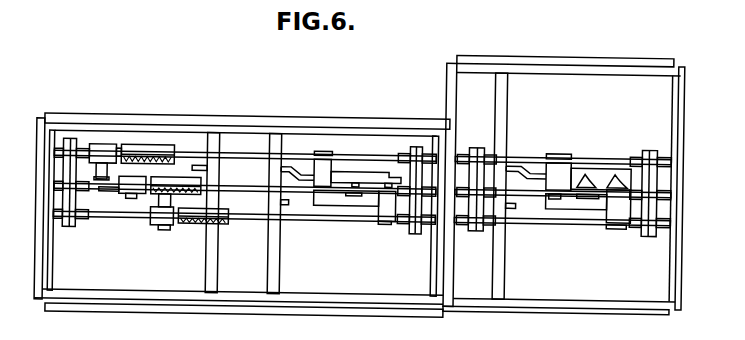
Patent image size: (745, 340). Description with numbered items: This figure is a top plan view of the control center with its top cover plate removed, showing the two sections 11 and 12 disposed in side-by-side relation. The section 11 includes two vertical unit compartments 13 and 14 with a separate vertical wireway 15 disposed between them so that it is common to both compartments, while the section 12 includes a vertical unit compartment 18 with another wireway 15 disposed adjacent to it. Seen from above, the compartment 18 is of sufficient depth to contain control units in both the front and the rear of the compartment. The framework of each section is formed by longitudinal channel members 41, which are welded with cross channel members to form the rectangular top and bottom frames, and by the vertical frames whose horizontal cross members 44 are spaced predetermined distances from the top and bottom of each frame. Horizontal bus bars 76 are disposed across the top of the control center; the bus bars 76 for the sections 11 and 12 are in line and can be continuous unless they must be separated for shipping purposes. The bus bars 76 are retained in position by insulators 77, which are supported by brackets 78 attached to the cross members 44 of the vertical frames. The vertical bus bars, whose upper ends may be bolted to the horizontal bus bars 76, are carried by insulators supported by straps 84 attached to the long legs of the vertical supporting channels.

The section 11 is at (246, 105).
The section 12 is at (570, 43).
The vertical unit compartment 13 is at (146, 264).
The vertical unit compartment 14 is at (366, 260).
The vertical wireway 15 is at (254, 262).
The vertical unit compartment 18 is at (592, 262).
The longitudinal channel member 41 is at (343, 122).
The horizontal cross member 44 is at (283, 251).
The horizontal bus bar 76 is at (89, 188).
The insulator 77 is at (72, 140).
The bracket 78 is at (57, 164).
The strap 84 is at (537, 158).